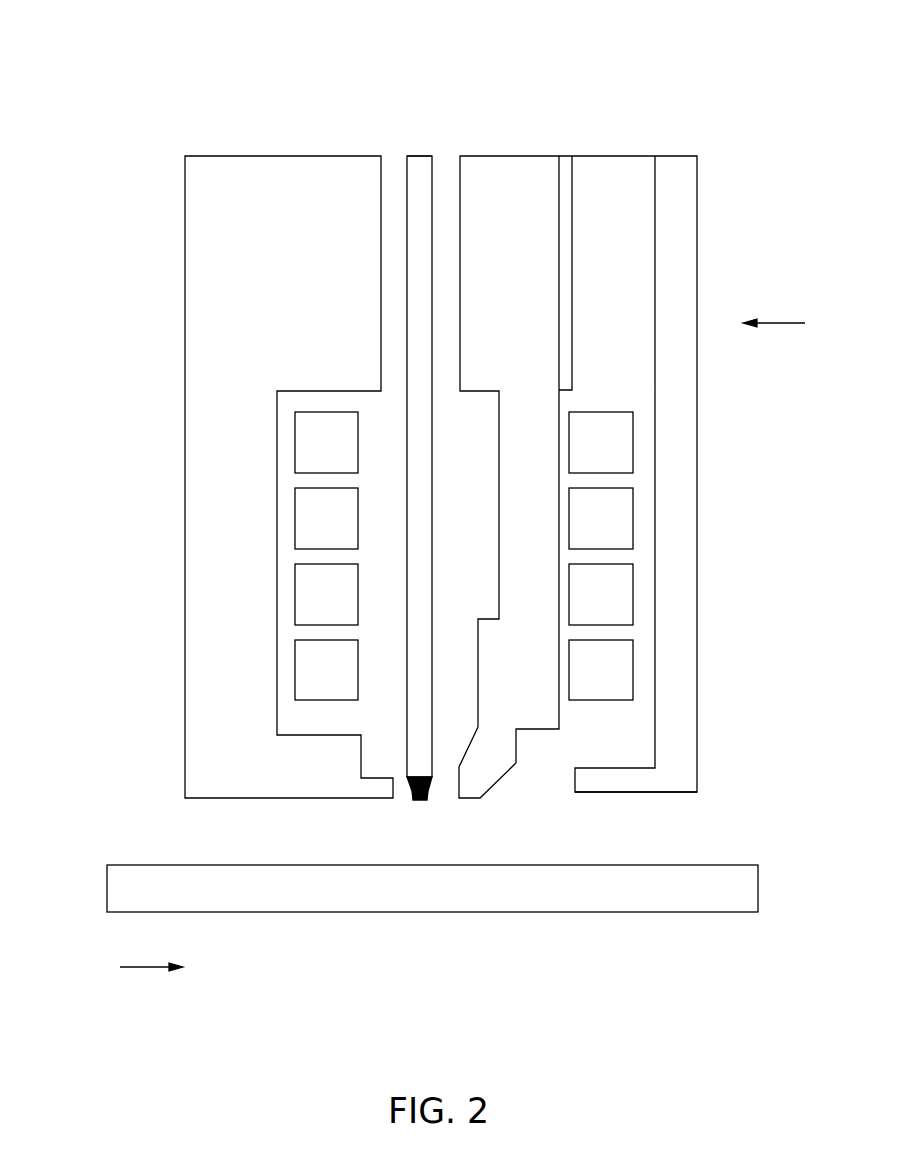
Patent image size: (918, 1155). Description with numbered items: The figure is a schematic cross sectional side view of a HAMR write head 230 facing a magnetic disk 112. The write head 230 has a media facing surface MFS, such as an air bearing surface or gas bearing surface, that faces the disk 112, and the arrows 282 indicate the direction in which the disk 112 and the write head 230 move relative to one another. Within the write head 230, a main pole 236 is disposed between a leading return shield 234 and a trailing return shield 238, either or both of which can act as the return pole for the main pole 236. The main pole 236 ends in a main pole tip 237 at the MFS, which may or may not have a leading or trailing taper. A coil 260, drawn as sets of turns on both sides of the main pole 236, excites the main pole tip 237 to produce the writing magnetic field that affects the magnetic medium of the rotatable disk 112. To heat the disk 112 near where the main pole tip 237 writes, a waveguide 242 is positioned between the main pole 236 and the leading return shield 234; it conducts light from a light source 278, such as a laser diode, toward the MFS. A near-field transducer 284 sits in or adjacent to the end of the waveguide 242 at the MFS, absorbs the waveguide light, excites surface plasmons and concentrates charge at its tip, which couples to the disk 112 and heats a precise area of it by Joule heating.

The HAMR write head 230 is at (145, 52).
The light source 278 is at (418, 155).
The leading return shield 234 is at (249, 533).
The waveguide 242 is at (420, 298).
The near-field transducer 284 is at (420, 803).
The main pole 236 is at (550, 531).
The main pole tip 237 is at (487, 763).
The trailing return shield 238 is at (675, 520).
The coil 260 is at (347, 453).
The media facing surface MFS is at (653, 798).
The magnetic disk 112 is at (447, 903).
The arrows 282 is at (788, 323).